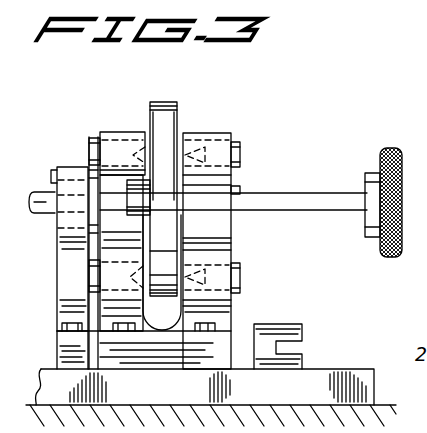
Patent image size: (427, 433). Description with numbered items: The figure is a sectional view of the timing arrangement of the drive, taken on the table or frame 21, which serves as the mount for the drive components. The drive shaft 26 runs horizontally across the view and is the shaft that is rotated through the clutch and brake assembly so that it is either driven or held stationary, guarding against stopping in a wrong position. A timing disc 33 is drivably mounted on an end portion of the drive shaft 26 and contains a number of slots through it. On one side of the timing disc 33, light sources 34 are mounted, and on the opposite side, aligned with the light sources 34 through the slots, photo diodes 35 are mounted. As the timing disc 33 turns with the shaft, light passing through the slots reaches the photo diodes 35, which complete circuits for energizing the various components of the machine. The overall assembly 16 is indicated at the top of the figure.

The indexing mechanism 16 is at (246, 116).
The table or frame 21 is at (318, 384).
The drive shaft 26 is at (316, 200).
The timing disc 33 is at (167, 104).
The light sources 34 is at (241, 155).
The photo diodes 35 is at (96, 148).